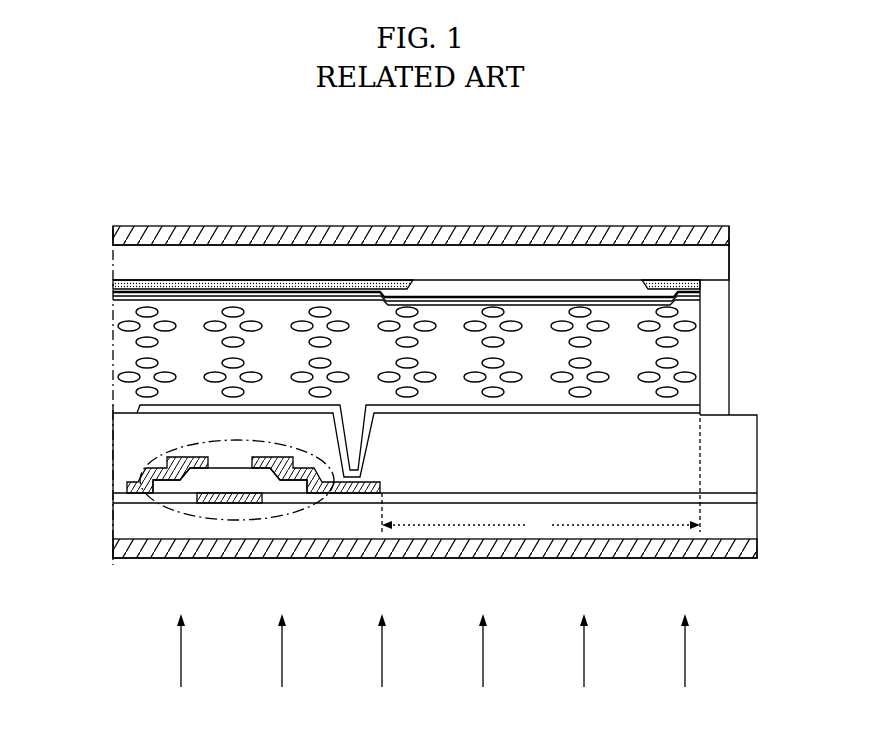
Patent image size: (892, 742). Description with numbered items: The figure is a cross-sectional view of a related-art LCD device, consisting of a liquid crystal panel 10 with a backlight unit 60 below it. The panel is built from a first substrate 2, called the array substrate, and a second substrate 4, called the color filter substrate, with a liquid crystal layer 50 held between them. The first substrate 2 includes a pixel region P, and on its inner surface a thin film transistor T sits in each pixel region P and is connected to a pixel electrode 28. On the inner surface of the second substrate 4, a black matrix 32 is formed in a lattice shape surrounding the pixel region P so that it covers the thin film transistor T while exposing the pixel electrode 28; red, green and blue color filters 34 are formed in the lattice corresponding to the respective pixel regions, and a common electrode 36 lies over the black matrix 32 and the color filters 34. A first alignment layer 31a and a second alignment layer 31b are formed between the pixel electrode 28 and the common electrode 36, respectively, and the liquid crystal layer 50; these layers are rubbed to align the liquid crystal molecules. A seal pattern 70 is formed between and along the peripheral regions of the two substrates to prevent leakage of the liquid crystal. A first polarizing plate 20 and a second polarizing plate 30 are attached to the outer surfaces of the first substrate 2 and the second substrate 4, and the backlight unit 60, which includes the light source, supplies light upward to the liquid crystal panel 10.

The liquid crystal panel 10 is at (742, 155).
The second polarizing plate 30 is at (632, 226).
The second substrate 4 is at (720, 263).
The color filters 34 is at (513, 291).
The black matrix 32 is at (113, 277).
The second alignment layer 31b is at (700, 291).
The common electrode 36 is at (113, 292).
The seal pattern 70 is at (710, 333).
The liquid crystal layer 50 is at (113, 346).
The first alignment layer 31a is at (700, 403).
The pixel electrode 28 is at (470, 414).
The thin film transistor T is at (153, 503).
The pixel region P is at (541, 476).
The first substrate 2 is at (748, 527).
The first polarizing plate 20 is at (720, 558).
The backlight unit 60 is at (433, 665).